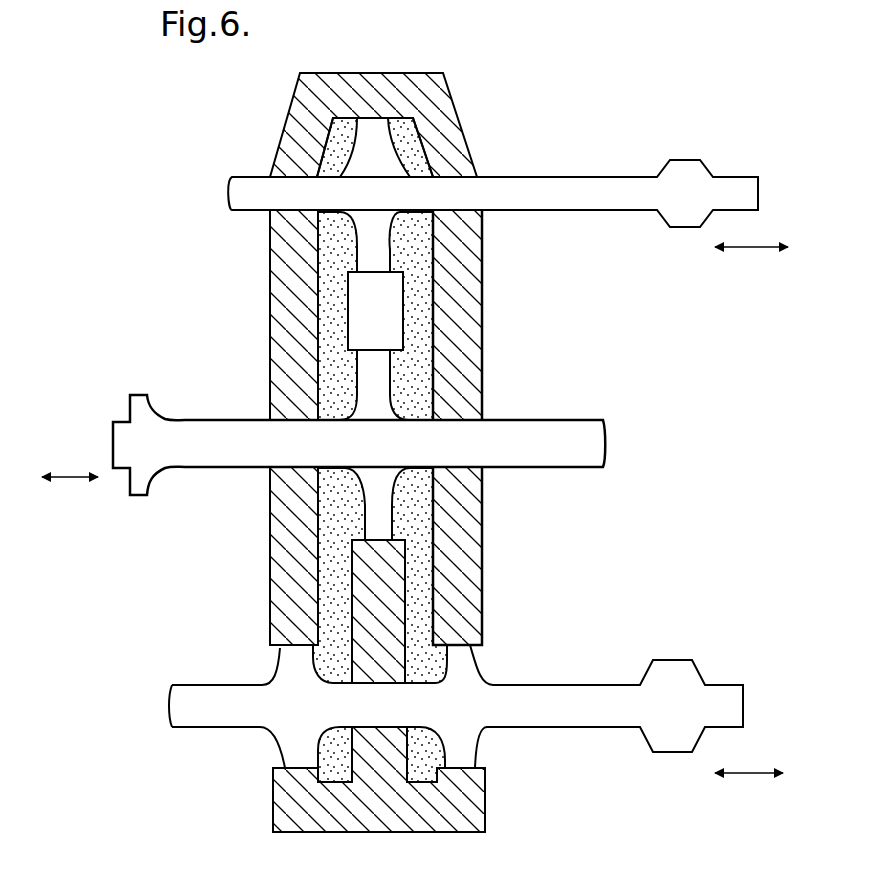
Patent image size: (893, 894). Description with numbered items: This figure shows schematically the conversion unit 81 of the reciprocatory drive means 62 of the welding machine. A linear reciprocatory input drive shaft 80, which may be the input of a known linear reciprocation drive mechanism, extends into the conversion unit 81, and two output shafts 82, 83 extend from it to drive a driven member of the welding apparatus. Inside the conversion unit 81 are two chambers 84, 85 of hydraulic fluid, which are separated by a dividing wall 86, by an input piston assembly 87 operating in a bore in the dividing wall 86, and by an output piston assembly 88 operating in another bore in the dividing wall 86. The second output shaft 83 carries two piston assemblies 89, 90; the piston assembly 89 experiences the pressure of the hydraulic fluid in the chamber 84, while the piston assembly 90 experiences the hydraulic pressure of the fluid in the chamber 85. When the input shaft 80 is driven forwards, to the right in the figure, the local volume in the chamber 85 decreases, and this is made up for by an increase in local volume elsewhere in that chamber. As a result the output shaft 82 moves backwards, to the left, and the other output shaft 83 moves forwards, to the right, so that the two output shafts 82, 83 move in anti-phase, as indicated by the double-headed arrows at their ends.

The reciprocatory drive means 62 is at (562, 802).
The linear reciprocatory input drive shaft 80 is at (186, 437).
The conversion unit 81 is at (240, 168).
The first output shaft 82 is at (545, 186).
The second output shaft 83 is at (573, 693).
The chamber 84 is at (330, 232).
The chamber 85 is at (415, 528).
The dividing wall 86 is at (398, 313).
The input piston assembly 87 is at (370, 468).
The output piston assembly 88 is at (372, 140).
The piston assembly 89 is at (285, 727).
The piston assembly 90 is at (462, 738).